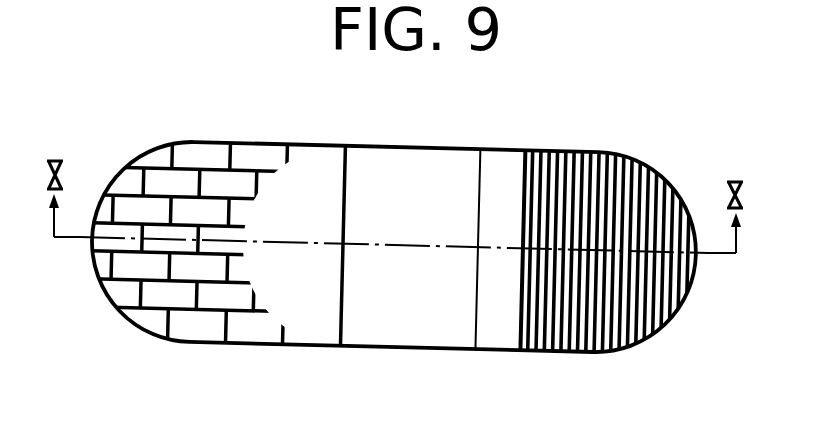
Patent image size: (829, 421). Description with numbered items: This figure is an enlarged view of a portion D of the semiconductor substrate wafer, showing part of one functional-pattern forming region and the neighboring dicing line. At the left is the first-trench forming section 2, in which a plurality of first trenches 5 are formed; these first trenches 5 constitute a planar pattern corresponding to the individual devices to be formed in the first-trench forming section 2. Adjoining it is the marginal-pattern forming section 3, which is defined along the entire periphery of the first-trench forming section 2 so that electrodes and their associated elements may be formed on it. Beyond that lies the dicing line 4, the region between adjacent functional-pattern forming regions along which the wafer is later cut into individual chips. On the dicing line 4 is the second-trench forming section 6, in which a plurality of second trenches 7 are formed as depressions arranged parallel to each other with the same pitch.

The first-trench forming section 2 is at (259, 160).
The marginal-pattern forming section 3 is at (413, 172).
The dicing line 4 is at (498, 176).
The first trench 5 is at (285, 332).
The second-trench forming section 6 is at (582, 178).
The second trench 7 is at (591, 338).
The portion D is at (662, 162).